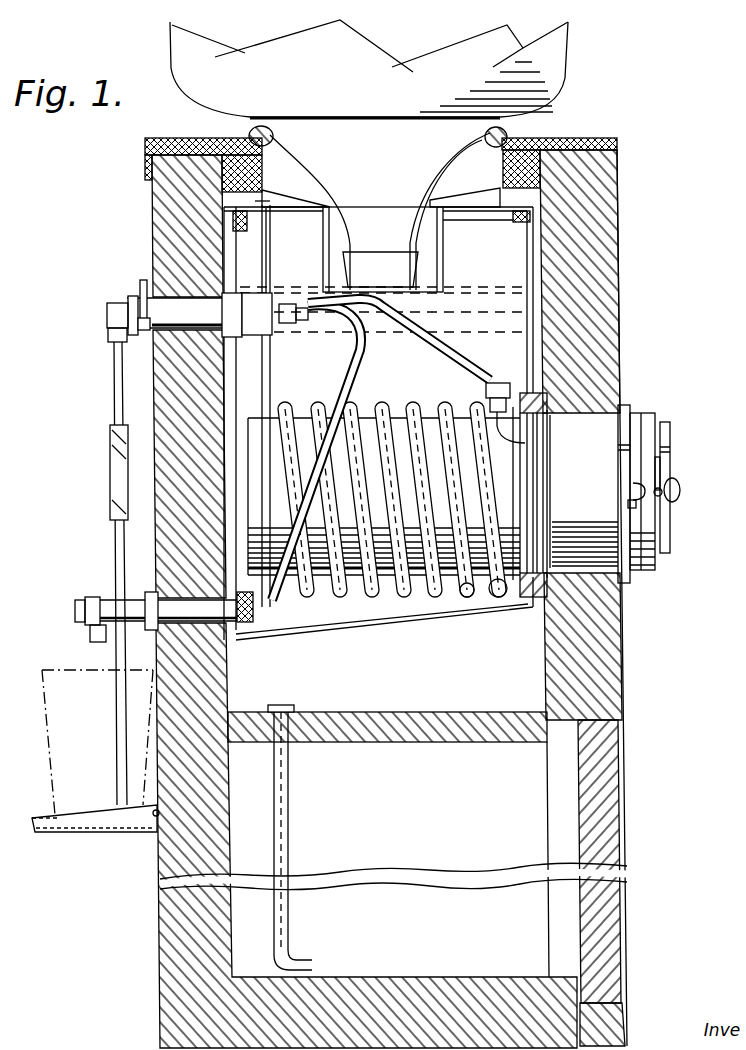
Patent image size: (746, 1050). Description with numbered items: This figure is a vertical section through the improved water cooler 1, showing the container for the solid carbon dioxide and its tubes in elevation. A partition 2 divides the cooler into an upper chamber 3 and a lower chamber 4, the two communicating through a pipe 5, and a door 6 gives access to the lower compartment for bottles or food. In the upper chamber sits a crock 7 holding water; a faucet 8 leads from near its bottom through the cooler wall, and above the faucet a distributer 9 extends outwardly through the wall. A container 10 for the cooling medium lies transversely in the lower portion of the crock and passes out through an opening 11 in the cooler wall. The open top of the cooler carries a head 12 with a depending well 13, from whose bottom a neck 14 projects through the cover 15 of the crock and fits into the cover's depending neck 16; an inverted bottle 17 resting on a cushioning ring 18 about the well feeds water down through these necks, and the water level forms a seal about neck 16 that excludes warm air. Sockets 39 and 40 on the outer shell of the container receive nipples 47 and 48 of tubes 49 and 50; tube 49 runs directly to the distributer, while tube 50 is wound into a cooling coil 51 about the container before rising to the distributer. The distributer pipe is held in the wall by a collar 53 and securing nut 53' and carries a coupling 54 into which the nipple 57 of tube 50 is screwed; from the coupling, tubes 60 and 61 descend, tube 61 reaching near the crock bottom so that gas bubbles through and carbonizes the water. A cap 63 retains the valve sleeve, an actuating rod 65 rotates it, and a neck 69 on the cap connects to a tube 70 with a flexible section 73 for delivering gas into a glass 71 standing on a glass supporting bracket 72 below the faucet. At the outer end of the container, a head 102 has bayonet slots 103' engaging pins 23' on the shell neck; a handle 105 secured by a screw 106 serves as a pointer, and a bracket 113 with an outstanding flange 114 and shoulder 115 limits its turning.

The water cooler 1 is at (600, 337).
The partition 2 is at (430, 742).
The upper chamber 3 is at (530, 682).
The lower chamber 4 is at (240, 938).
The pipe 5 is at (290, 812).
The door 6 is at (598, 807).
The crock 7 is at (522, 256).
The faucet 8 is at (102, 600).
The distributer 9 is at (184, 315).
The container 10 is at (413, 600).
The opening 11 is at (598, 412).
The head 12 is at (545, 140).
The well 13 is at (300, 183).
The neck 14 is at (433, 200).
The cover 15 is at (497, 210).
The depending neck 16 is at (430, 254).
The bottle 17 is at (553, 50).
The cushioning ring 18 is at (266, 125).
The pins 23' is at (605, 489).
The socket 39 is at (525, 443).
The socket 40 is at (475, 598).
The nipple 47 is at (487, 392).
The nipple 48 is at (494, 600).
The tube 49 is at (455, 356).
The tube 50 is at (358, 375).
The coil 51 is at (390, 404).
The collar 53 is at (136, 342).
The securing nut 53' is at (162, 361).
The coupling 54 is at (273, 296).
The nipple 57 is at (300, 325).
The tube 60 is at (270, 252).
The tube 61 is at (272, 362).
The cap 63 is at (110, 306).
The actuating rod 65 is at (140, 285).
The neck 69 is at (108, 335).
The tube 70 is at (113, 365).
The glass 71 is at (52, 716).
The glass supporting bracket 72 is at (45, 832).
The flexible section 73 is at (111, 468).
The head 102 is at (648, 425).
The bayonet slots 103' is at (596, 505).
The handle 105 is at (670, 525).
The screw 106 is at (681, 492).
The bracket 113 is at (655, 478).
The outstanding flange 114 is at (656, 494).
The shoulder 115 is at (672, 480).